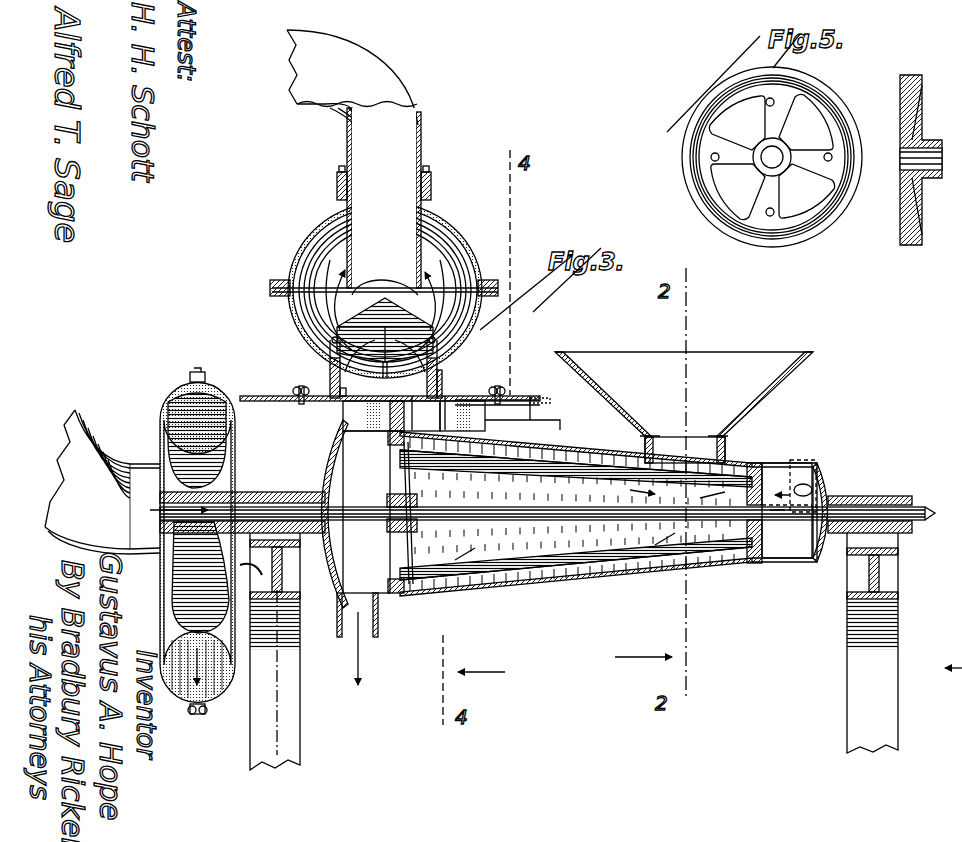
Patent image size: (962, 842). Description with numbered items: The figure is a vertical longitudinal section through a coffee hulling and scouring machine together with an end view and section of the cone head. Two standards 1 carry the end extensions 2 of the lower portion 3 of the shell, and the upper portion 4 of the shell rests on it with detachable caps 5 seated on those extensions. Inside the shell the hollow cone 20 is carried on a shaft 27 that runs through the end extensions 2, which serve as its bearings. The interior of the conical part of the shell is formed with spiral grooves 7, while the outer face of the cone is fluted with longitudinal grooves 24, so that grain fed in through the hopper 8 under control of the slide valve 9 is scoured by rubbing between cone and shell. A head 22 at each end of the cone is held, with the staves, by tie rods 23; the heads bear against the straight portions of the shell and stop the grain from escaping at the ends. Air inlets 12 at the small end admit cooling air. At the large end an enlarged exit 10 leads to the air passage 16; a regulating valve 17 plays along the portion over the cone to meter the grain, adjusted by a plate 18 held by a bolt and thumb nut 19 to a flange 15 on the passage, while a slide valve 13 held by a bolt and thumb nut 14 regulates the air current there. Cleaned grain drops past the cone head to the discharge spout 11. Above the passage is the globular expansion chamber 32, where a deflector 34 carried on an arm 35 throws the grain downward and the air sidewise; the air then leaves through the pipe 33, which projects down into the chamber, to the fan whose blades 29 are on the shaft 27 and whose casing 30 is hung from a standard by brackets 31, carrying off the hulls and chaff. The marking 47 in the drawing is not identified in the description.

In FIG. 3, the standards 1 is at (574, 651).
In FIG. 3, the end extensions 2 is at (318, 508).
In FIG. 3, the lower portion of the shell 3 is at (670, 563).
In FIG. 3, the upper portion of the shell 4 is at (747, 470).
In FIG. 3, the detachable caps 5 is at (280, 492).
In FIG. 3, the spiral grooves 7 is at (480, 580).
In FIG. 3, the feed hopper 8 is at (684, 407).
In FIG. 3, the slide valve 9 is at (678, 455).
In FIG. 3, the exit 10 is at (427, 414).
In FIG. 3, the discharge spout 11 is at (360, 628).
In FIG. 3, the air inlets 12 is at (808, 462).
In FIG. 3, the slide valve 13 is at (390, 400).
In FIG. 3, the bolt and thumb nut 14 is at (302, 392).
In FIG. 3, the flange 15 is at (451, 385).
In FIG. 3, the air passage 16 is at (332, 372).
In FIG. 3, the regulating valve 17 is at (471, 398).
In FIG. 3, the plate 18 is at (547, 386).
In FIG. 3, the bolt and thumb nut 19 is at (498, 396).
In FIG. 3, the cone 20 is at (575, 600).
In FIG. 3, the head 22 is at (393, 480).
In FIG. 5, the head 22 is at (884, 95).
In FIG. 3, the tie rods 23 is at (557, 518).
In FIG. 3, the longitudinal grooves 24 is at (590, 450).
In FIG. 3, the shaft 27 is at (930, 500).
In FIG. 3, the fan blades 29 is at (208, 582).
In FIG. 3, the fan casing 30 is at (190, 385).
In FIG. 3, the brackets 31 is at (262, 565).
In FIG. 3, the expansion chamber 32 is at (384, 243).
In FIG. 3, the pipe 33 is at (238, 292).
In FIG. 3, the deflector 34 is at (395, 318).
In FIG. 3, the arm 35 is at (432, 330).
In FIG. 3, the opening 47 is at (522, 415).